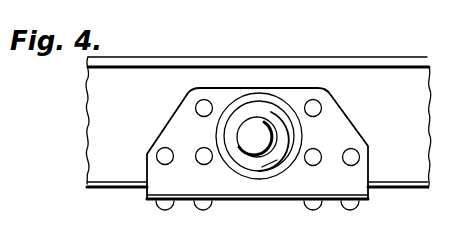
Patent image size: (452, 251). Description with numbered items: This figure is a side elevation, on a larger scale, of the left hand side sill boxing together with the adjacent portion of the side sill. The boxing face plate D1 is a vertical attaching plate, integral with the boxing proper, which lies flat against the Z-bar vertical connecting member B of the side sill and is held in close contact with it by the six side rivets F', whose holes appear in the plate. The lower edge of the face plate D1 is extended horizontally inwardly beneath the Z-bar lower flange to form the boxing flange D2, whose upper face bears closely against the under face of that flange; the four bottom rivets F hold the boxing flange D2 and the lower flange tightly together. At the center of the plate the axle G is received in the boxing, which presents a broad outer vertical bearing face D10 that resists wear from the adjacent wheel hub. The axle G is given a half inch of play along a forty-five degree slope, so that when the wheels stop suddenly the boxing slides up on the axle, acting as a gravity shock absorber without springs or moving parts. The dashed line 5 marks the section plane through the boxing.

The section line 5 is at (261, 218).
The axle G is at (262, 132).
The Z-bar vertical connecting member B is at (258, 122).
The boxing face plate D1 is at (257, 143).
The boxing flange D2 is at (147, 197).
The broad outer vertical bearing face D10 is at (280, 160).
The bottom rivets F is at (271, 222).
The side rivets F' is at (228, 129).